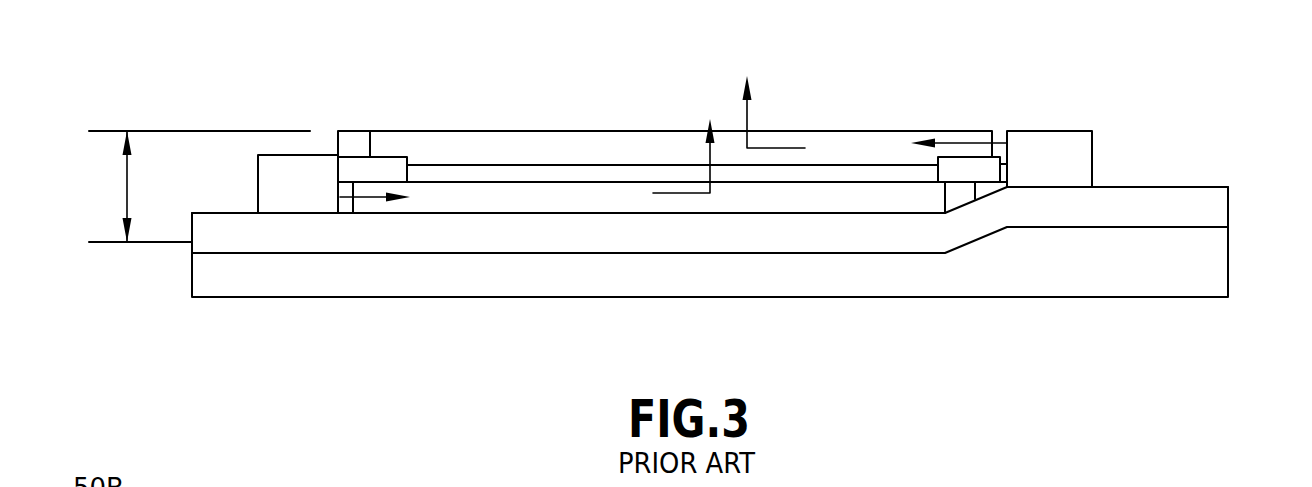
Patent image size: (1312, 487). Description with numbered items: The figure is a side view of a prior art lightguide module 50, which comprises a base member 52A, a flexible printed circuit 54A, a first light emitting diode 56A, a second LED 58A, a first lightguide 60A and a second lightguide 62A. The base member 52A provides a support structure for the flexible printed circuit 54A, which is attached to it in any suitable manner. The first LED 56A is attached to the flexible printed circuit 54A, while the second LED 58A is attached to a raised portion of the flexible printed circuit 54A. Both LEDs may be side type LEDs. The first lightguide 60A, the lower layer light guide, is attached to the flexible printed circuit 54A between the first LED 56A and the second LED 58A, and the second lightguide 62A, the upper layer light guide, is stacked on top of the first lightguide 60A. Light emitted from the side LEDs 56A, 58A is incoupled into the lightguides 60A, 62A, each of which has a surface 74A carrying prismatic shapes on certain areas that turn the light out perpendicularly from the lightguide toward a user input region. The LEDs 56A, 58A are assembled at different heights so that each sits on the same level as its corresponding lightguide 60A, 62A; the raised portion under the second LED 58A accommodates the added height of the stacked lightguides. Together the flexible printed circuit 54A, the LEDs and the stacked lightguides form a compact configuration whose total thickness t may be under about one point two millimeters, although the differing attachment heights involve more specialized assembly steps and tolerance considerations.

The lightguide module 50 is at (168, 56).
The base member 52A is at (737, 297).
The flexible printed circuit 54A is at (500, 238).
The first light emitting diode 56A is at (288, 197).
The second LED 58A is at (1092, 130).
The first lightguide 60A is at (752, 197).
The second lightguide 62A is at (637, 147).
The surface 74A is at (788, 128).
The total thickness t is at (127, 188).